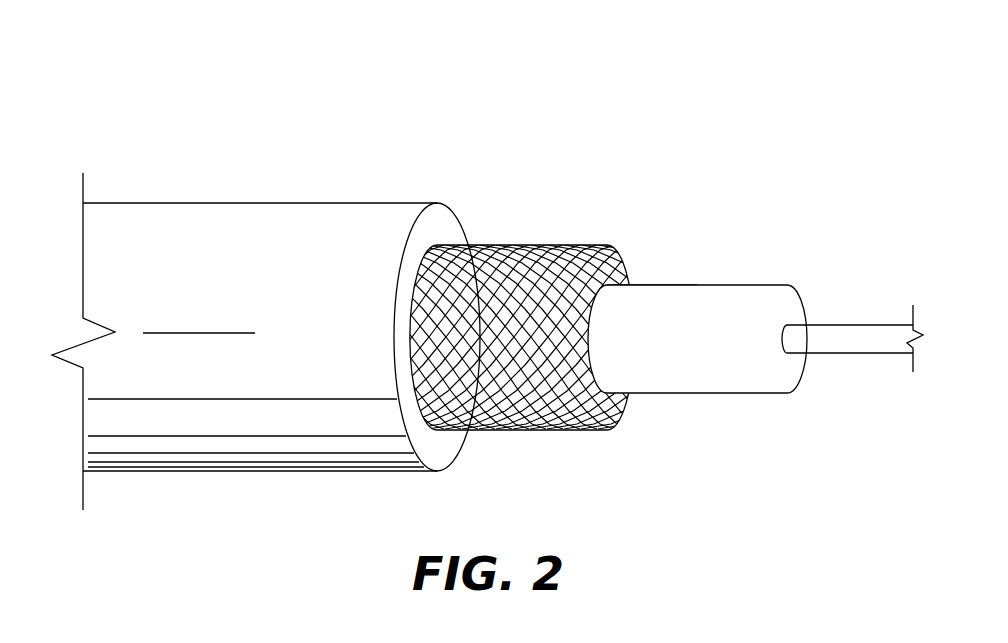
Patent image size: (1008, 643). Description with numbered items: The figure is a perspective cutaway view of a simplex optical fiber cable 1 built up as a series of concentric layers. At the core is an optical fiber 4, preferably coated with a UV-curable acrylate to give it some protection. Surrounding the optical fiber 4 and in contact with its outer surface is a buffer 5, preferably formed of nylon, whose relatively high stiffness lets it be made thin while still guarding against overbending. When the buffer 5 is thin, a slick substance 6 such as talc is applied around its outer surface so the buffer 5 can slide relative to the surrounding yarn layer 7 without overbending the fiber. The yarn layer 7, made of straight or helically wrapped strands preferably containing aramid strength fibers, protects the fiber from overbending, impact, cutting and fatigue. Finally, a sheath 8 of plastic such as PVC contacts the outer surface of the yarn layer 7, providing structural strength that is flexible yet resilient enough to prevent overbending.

The simplex optical fiber cable 1 is at (497, 122).
The optical fiber 4 is at (852, 315).
The buffer 5 is at (742, 277).
The substance 6 is at (683, 277).
The yarn layer 7 is at (536, 242).
The sheath 8 is at (318, 199).